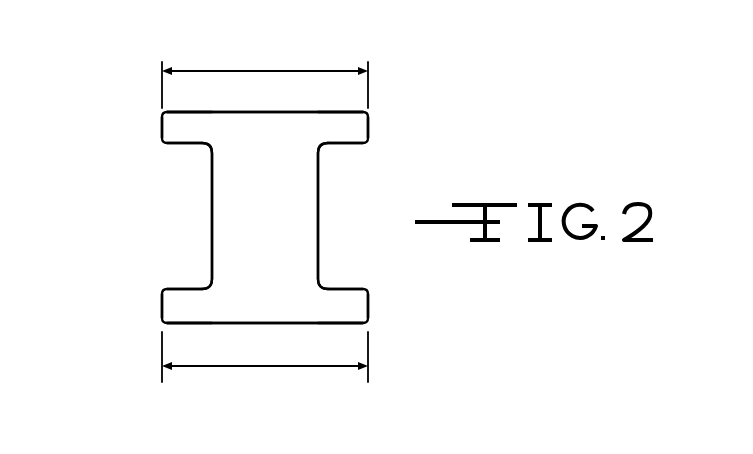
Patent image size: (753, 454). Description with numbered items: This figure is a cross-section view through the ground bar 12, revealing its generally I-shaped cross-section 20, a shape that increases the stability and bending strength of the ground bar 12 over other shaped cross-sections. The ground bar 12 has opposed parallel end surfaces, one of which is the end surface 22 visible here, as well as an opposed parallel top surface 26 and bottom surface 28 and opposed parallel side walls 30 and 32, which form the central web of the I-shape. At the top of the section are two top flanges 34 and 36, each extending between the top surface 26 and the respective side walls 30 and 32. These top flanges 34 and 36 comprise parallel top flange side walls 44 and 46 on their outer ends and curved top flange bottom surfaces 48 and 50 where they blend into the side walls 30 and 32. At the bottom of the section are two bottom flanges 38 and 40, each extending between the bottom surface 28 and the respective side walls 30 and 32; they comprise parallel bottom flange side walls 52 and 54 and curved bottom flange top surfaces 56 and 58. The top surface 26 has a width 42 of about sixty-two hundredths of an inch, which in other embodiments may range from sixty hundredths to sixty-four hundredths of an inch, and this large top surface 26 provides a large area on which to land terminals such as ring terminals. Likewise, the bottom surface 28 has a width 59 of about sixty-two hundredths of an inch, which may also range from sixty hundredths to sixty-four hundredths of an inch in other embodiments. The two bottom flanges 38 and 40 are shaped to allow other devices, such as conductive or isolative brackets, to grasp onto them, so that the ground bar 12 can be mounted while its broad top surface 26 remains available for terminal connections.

The ground bar 12 is at (312, 104).
The I-shaped cross-section 20 is at (212, 222).
The end surface 22 is at (300, 210).
The top surface 26 is at (218, 112).
The bottom surface 28 is at (247, 323).
The side wall 30 is at (212, 249).
The side wall 32 is at (318, 252).
The top flange 34 is at (172, 130).
The top flange 36 is at (355, 128).
The bottom flange 38 is at (168, 305).
The bottom flange 40 is at (358, 308).
The width of the top surface 42 is at (218, 70).
The top flange side wall 44 is at (163, 132).
The top flange side wall 46 is at (368, 127).
The curved top flange bottom surface 48 is at (172, 147).
The curved top flange bottom surface 50 is at (343, 145).
The bottom flange side wall 52 is at (163, 297).
The bottom flange side wall 54 is at (368, 300).
The curved bottom flange top surface 56 is at (183, 288).
The curved bottom flange top surface 58 is at (338, 288).
The width of the bottom surface 59 is at (242, 366).